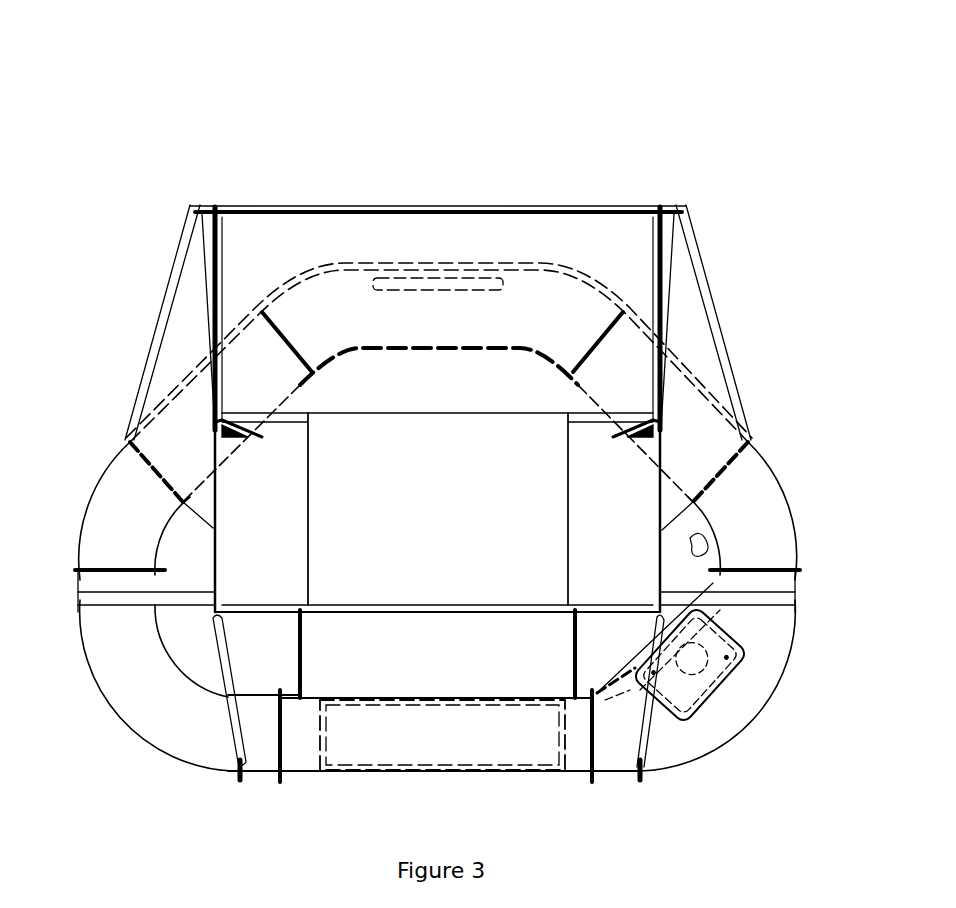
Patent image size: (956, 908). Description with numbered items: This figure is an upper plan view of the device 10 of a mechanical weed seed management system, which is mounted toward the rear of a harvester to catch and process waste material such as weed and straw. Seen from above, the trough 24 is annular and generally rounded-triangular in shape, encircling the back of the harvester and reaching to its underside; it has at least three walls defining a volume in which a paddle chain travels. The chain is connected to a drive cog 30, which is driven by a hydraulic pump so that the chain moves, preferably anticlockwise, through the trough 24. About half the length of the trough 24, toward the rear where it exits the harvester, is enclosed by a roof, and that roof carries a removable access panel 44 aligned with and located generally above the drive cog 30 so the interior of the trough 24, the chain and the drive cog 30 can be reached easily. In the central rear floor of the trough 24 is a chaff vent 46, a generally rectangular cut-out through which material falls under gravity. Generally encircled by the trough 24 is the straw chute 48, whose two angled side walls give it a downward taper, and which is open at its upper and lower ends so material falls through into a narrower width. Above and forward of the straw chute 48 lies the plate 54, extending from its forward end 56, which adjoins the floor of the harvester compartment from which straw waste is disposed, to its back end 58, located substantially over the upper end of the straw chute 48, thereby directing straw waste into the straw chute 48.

The device 10 is at (233, 55).
The trough 24 is at (161, 705).
The drive cog 30 is at (680, 660).
The access panel 44 is at (737, 660).
The chaff vent 46 is at (506, 752).
The straw chute 48 is at (450, 522).
The plate 54 is at (632, 263).
The forward end 56 is at (500, 212).
The back end 58 is at (462, 413).